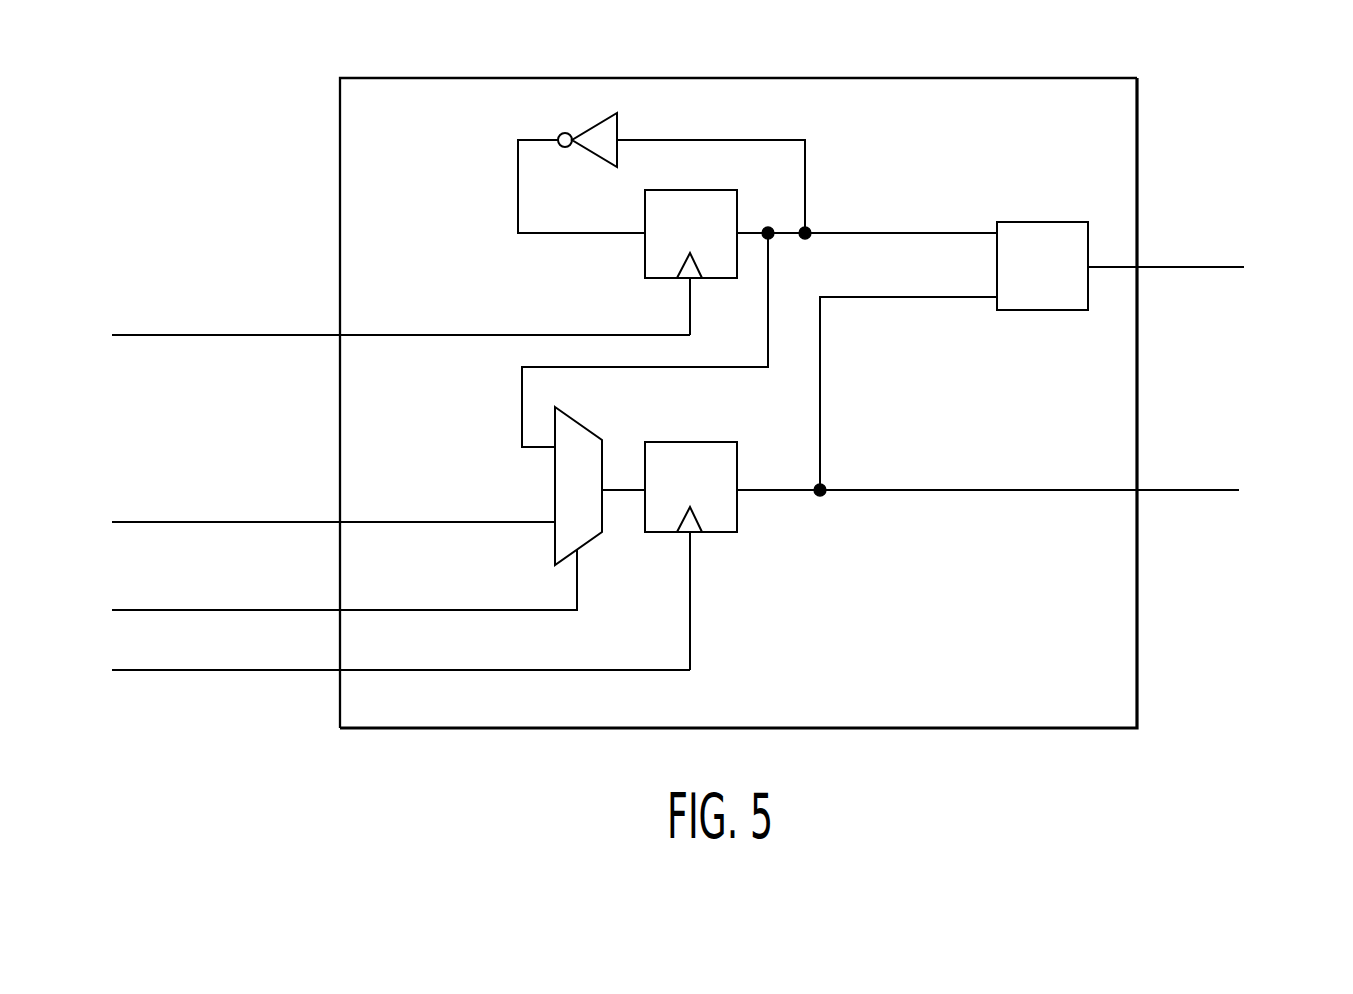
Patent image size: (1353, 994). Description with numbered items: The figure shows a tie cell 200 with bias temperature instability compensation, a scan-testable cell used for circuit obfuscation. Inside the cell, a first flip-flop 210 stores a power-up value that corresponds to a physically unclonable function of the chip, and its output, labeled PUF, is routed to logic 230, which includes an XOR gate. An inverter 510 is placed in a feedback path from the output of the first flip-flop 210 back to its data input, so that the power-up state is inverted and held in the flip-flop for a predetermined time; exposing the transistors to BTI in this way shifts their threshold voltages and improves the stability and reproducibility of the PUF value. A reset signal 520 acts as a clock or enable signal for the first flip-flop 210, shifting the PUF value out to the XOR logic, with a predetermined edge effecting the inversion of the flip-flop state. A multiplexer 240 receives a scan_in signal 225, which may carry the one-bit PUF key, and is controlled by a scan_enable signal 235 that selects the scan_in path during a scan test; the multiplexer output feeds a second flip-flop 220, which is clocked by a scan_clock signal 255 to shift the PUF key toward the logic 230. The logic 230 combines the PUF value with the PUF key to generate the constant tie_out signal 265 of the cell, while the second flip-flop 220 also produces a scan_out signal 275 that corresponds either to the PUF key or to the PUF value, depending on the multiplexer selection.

The tie cell 200 is at (955, 78).
The inverter 510 is at (617, 132).
The first flip-flop 210 is at (645, 252).
The second flip-flop 220 is at (737, 520).
The logic 230 is at (1033, 222).
The multiplexer 240 is at (555, 485).
The tie_out signal 265 is at (1194, 267).
The scan_out signal 275 is at (1203, 490).
The reset signal 520 is at (252, 335).
The scan_in signal 225 is at (273, 522).
The scan_enable signal 235 is at (272, 610).
The scan_clock signal 255 is at (262, 670).